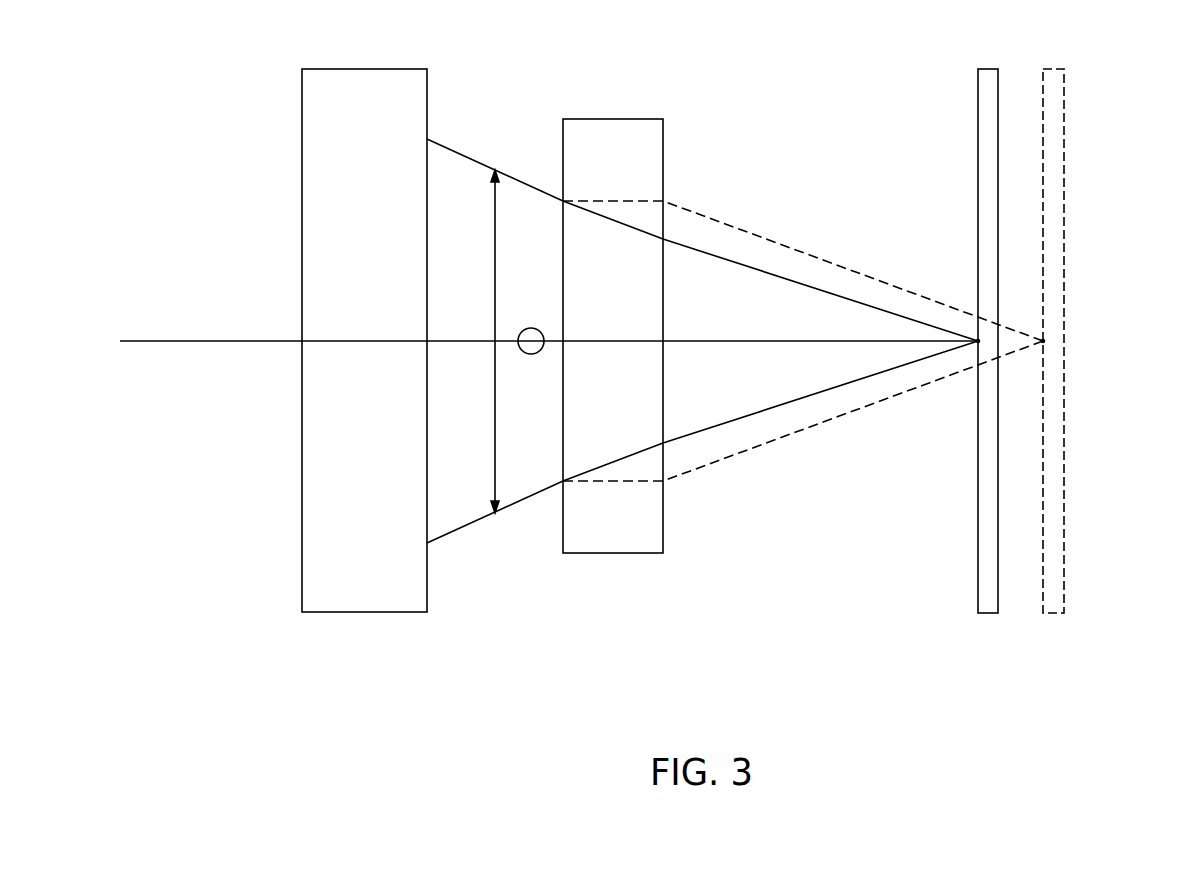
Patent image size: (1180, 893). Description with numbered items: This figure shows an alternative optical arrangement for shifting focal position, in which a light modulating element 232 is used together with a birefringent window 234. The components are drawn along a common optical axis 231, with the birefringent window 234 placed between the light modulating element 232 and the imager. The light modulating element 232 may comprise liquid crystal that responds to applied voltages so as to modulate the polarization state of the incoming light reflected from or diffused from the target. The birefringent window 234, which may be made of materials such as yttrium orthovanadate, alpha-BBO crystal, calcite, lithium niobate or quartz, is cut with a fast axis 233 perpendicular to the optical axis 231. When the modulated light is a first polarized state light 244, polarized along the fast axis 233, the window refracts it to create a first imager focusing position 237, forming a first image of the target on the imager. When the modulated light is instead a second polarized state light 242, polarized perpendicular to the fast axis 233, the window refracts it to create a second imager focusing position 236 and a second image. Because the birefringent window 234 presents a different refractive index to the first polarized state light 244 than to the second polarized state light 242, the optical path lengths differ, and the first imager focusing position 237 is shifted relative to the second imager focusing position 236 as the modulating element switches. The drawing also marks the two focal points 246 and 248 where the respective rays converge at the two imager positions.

The optical axis 231 is at (200, 342).
The light modulating element 232 is at (380, 592).
The fast axis 233 is at (493, 469).
The birefringent window 234 is at (610, 533).
The second imager focusing position 236 is at (992, 597).
The first imager focusing position 237 is at (1057, 597).
The second polarized state light 242 is at (455, 152).
The first polarized state light 244 is at (790, 247).
The focal point on image sensor 246 is at (977, 343).
The alternate focal point 248 is at (1038, 338).